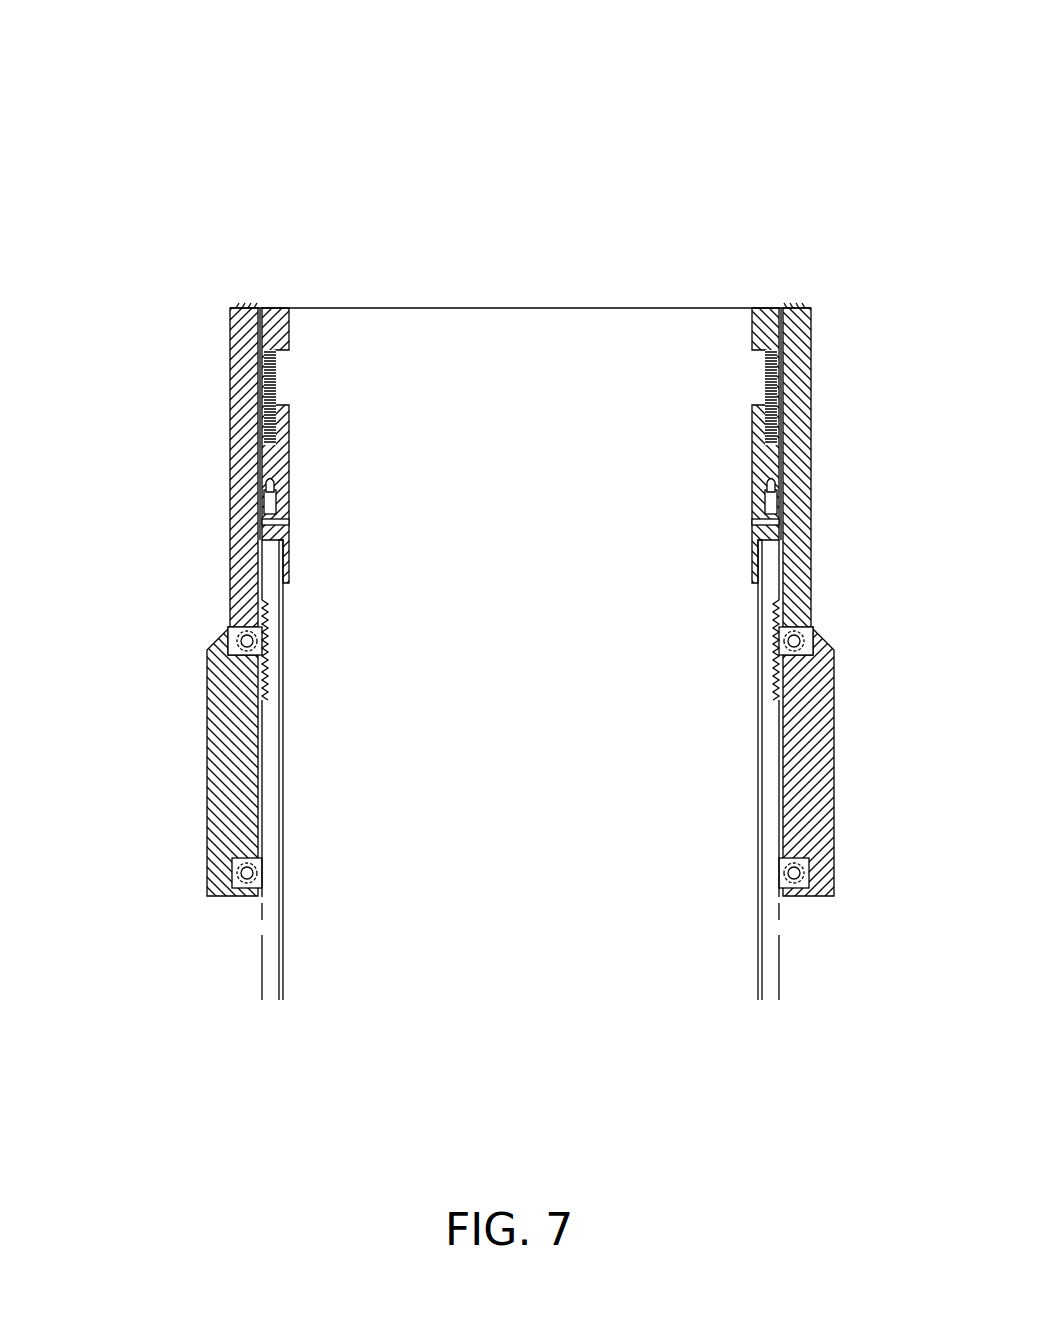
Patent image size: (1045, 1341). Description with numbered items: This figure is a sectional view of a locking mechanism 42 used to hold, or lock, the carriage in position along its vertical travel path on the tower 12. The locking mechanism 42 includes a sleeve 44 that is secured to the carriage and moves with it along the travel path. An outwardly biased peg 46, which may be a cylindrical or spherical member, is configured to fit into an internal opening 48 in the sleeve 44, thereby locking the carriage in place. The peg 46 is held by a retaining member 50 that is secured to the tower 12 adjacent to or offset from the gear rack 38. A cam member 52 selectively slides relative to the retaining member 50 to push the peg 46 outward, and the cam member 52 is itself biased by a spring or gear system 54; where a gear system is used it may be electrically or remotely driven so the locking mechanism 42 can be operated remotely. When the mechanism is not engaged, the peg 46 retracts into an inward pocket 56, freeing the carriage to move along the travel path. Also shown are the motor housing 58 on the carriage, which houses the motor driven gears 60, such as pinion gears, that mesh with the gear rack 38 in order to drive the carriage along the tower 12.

The locking mechanism 42 is at (152, 142).
The sleeve 44 is at (800, 308).
The spring or gear system 54 is at (790, 390).
The cam member 52 is at (757, 497).
The peg 46 is at (783, 485).
The inward pocket 56 is at (785, 499).
The internal opening 48 is at (267, 485).
The retaining member 50 is at (278, 543).
The motor housing 58 is at (815, 750).
The motor driven gear 60 is at (807, 897).
The tower 12 is at (760, 927).
The gear rack 38 is at (780, 963).